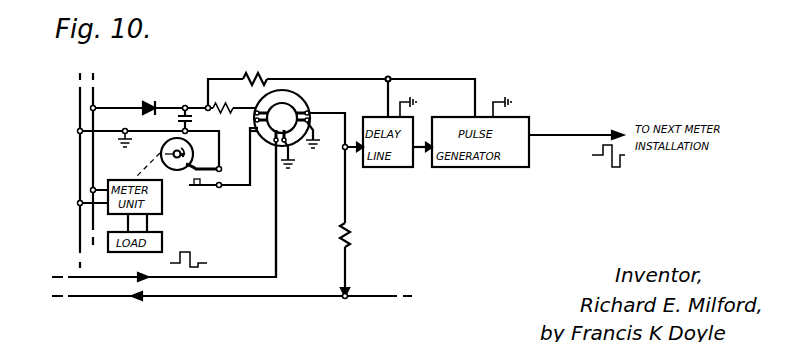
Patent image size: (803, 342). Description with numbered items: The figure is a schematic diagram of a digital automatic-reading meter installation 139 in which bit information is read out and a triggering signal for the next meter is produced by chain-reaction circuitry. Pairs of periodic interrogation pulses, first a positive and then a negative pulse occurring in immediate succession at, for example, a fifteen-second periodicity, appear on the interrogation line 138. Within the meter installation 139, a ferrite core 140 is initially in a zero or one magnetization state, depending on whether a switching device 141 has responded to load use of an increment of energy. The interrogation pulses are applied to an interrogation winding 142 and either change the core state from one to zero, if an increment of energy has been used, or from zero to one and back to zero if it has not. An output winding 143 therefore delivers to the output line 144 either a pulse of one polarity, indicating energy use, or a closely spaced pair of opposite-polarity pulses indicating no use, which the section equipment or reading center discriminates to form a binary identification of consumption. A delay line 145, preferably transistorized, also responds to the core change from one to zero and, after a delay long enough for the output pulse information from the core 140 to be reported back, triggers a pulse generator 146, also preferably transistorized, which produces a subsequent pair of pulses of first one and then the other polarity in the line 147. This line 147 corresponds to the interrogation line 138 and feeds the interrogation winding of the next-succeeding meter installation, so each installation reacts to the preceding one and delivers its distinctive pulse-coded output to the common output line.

The interrogation line 138 is at (222, 276).
The meter installation 139 is at (330, 72).
The ferrite core 140 is at (300, 100).
The switching device 141 is at (205, 193).
The interrogation winding 142 is at (278, 140).
The output winding 143 is at (307, 143).
The output line 144 is at (287, 297).
The delay line 145 is at (395, 168).
The pulse generator 146 is at (478, 168).
The line 147 is at (572, 132).